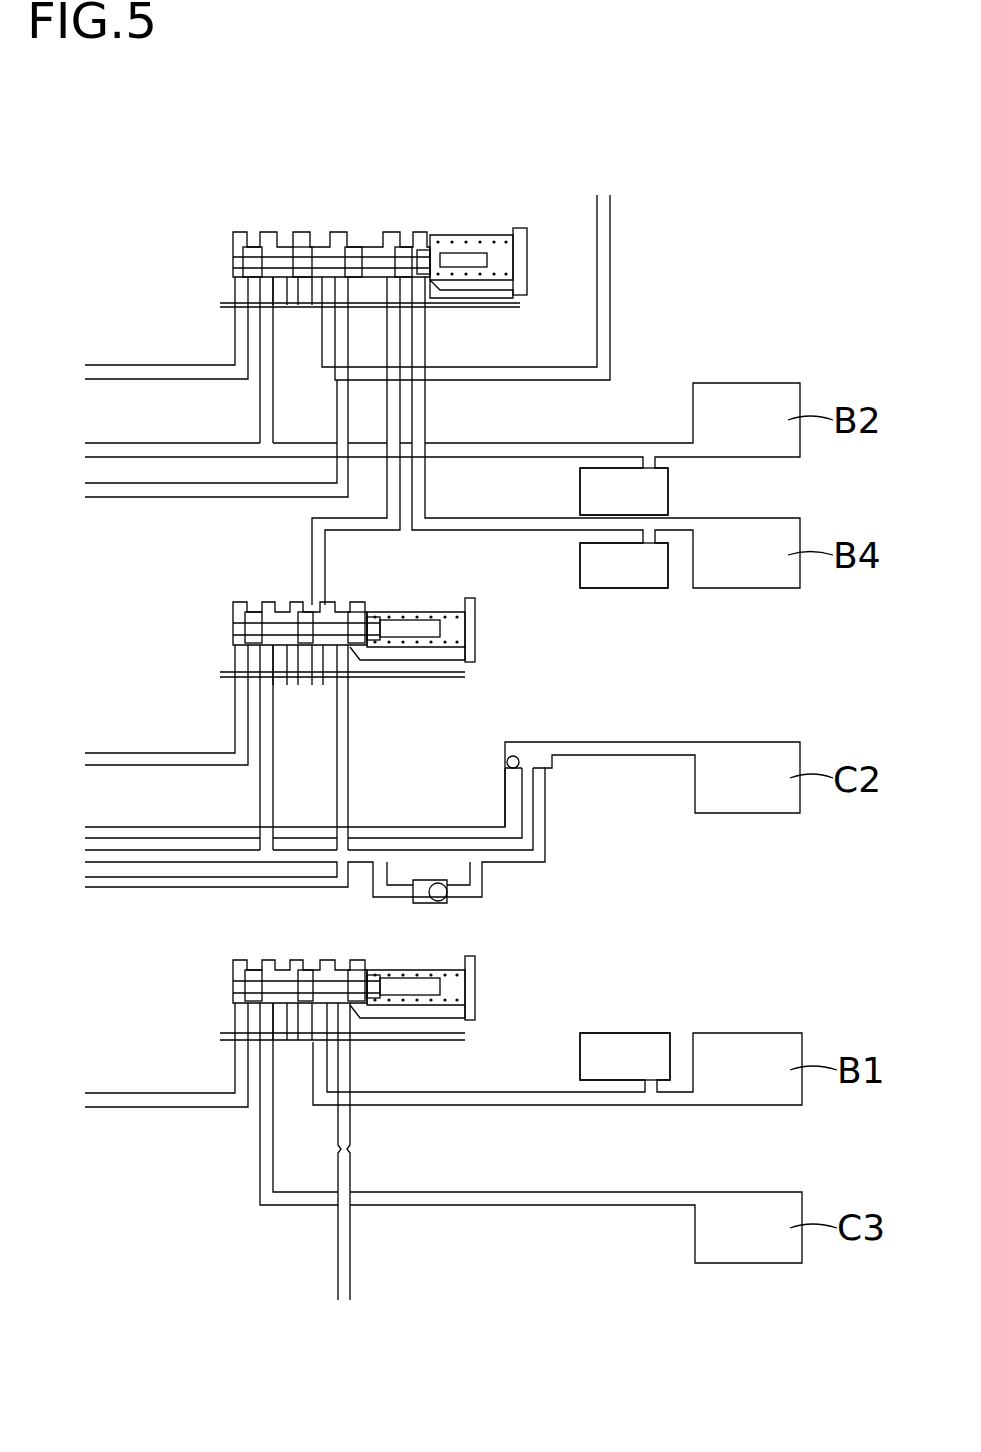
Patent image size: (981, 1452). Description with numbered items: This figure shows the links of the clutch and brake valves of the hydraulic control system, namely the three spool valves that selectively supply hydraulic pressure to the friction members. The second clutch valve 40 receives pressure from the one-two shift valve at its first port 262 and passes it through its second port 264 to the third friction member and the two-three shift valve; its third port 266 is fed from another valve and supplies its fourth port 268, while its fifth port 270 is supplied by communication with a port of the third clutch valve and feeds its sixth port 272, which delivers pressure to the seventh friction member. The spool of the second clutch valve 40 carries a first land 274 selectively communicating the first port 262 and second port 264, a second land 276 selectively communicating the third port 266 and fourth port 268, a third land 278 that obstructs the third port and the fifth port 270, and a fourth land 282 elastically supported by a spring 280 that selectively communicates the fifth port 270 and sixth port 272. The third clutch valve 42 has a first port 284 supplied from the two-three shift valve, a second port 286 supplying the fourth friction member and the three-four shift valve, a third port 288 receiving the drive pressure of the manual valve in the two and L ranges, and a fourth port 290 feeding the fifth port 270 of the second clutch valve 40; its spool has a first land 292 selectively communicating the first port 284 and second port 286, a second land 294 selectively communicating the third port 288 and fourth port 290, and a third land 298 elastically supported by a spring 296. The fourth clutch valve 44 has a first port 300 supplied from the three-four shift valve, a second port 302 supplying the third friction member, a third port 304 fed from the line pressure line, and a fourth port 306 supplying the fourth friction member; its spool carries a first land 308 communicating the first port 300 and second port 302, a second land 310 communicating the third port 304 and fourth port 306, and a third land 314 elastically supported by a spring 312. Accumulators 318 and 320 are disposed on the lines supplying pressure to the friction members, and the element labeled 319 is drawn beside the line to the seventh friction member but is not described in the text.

The second clutch valve 40 is at (205, 258).
The third clutch valve 42 is at (493, 643).
The fourth clutch valve 44 is at (487, 975).
The first port 262 is at (238, 284).
The second port 264 is at (265, 286).
The third port 266 is at (343, 284).
The fourth port 268 is at (317, 284).
The fifth port 270 is at (393, 283).
The sixth port 272 is at (418, 284).
The first land 274 is at (253, 250).
The second land 276 is at (302, 247).
The third land 278 is at (352, 248).
The spring 280 is at (470, 247).
The fourth land 282 is at (405, 247).
The first port 284 is at (238, 647).
The second port 286 is at (265, 653).
The third port 288 is at (345, 652).
The fourth port 290 is at (318, 605).
The first land 292 is at (253, 620).
The second land 294 is at (307, 620).
The spring 296 is at (450, 645).
The third land 298 is at (357, 618).
The first port 300 is at (240, 1008).
The second port 302 is at (270, 1012).
The third port 304 is at (342, 1013).
The fourth port 306 is at (318, 1013).
The first land 308 is at (252, 978).
The second land 310 is at (305, 975).
The spring 312 is at (453, 1003).
The third land 314 is at (357, 977).
The accumulator 318 is at (660, 493).
The accumulator 319 is at (623, 589).
The accumulator 320 is at (627, 1040).